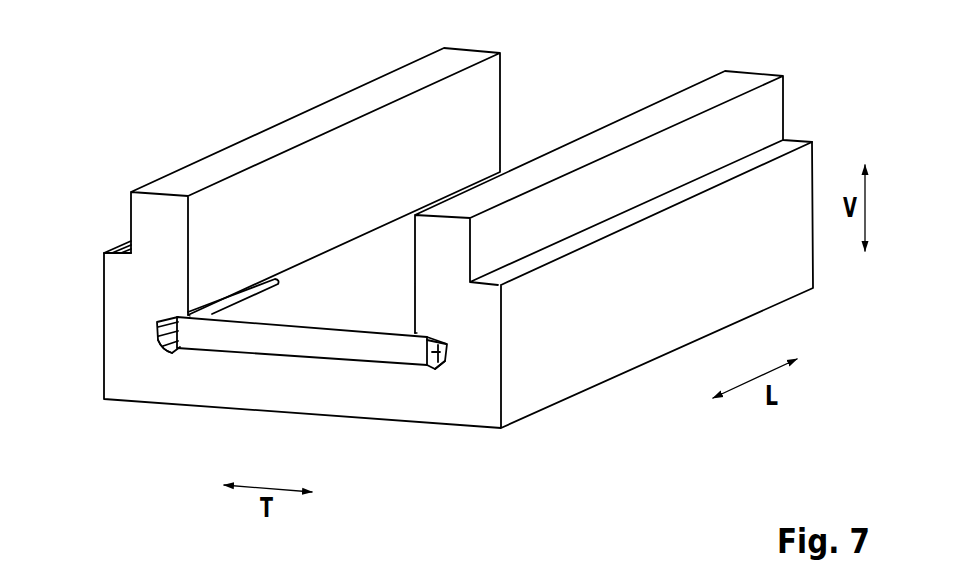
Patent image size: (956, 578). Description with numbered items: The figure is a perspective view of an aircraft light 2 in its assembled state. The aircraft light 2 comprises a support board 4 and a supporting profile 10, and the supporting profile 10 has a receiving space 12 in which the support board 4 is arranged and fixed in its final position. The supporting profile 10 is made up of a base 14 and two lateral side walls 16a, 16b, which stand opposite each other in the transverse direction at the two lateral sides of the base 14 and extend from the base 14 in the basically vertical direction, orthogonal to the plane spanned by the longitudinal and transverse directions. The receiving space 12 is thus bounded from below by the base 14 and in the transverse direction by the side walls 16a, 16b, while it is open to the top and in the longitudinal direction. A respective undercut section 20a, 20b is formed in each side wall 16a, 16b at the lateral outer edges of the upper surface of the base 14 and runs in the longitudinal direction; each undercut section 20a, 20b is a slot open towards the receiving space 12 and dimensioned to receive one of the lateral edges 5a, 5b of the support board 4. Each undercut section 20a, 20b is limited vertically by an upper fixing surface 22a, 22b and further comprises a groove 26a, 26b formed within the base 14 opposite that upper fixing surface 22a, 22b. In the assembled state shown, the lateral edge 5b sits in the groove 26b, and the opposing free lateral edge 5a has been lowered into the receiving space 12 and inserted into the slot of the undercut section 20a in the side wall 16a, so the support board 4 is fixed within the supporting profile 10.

The aircraft light 2 is at (448, 271).
The support board 4 is at (310, 403).
The lateral edge 5a is at (157, 337).
The lateral edge 5b is at (454, 365).
The supporting profile 10 is at (448, 248).
The receiving space 12 is at (448, 240).
The base 14 is at (222, 388).
The lateral side wall 16a is at (263, 181).
The lateral side wall 16b is at (642, 251).
The undercut section 20a is at (151, 345).
The undercut section 20b is at (478, 385).
The upper fixing surface 22a is at (165, 311).
The upper fixing surface 22b is at (443, 327).
The groove 26a is at (172, 363).
The groove 26b is at (430, 379).